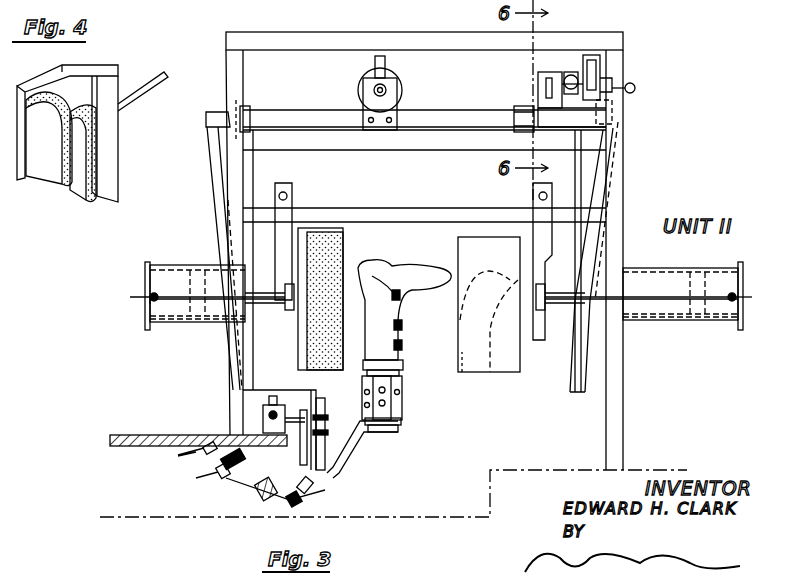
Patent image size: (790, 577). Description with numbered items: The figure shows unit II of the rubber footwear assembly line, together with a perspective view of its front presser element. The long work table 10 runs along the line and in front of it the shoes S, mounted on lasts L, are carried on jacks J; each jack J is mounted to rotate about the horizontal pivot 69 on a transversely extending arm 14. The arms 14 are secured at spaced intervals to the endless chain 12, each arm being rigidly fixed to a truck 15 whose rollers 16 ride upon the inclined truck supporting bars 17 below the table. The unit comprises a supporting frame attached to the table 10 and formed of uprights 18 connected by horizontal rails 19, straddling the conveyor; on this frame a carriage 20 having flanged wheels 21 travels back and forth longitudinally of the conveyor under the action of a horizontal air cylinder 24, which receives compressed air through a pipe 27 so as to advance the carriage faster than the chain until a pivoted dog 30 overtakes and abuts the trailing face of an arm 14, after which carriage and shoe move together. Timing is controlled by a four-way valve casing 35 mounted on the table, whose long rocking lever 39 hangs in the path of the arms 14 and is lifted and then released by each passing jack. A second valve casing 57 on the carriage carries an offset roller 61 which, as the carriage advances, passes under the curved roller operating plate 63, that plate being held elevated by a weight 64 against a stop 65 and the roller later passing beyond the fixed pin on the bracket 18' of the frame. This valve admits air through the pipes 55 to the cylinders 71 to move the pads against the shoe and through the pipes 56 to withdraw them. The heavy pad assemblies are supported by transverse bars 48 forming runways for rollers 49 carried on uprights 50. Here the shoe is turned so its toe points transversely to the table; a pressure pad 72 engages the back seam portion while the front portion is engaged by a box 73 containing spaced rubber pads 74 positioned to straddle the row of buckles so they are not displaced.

In FIG. 3, the table 10 is at (132, 434).
In FIG. 3, the chain 12 is at (281, 497).
In FIG. 3, the transversely extending arm 14 is at (352, 460).
In FIG. 3, the truck 15 is at (238, 484).
In FIG. 3, the rollers 16 is at (198, 481).
In FIG. 3, the truck supporting bars 17 is at (323, 498).
In FIG. 3, the uprights 18 is at (433, 252).
In FIG. 3, the bracket 18' is at (624, 112).
In FIG. 3, the horizontal rails 19 is at (300, 38).
In FIG. 3, the carriage 20 is at (455, 112).
In FIG. 3, the flanged wheels 21 is at (244, 104).
In FIG. 3, the air cylinder 24 is at (358, 92).
In FIG. 3, the pipe 27 is at (385, 60).
In FIG. 3, the dog 30 is at (368, 432).
In FIG. 3, the four-way valve casing 35 is at (262, 418).
In FIG. 3, the rocking lever 39 is at (300, 450).
In FIG. 3, the transverse bars 48 is at (418, 194).
In FIG. 3, the rollers 49 is at (292, 195).
In FIG. 3, the uprights 50 is at (288, 288).
In FIG. 3, the pipes 55 is at (138, 297).
In FIG. 3, the pipes 56 is at (225, 322).
In FIG. 3, the valve casing 57 is at (538, 80).
In FIG. 3, the offset roller 61 is at (610, 62).
In FIG. 3, the roller operating plate 63 is at (590, 54).
In FIG. 3, the weight 64 is at (635, 88).
In FIG. 3, the stop 65 is at (600, 72).
In FIG. 3, the horizontal pivot 69 is at (372, 404).
In FIG. 3, the cylinders 71 is at (182, 325).
In FIG. 3, the pressure pad 72 is at (342, 370).
In FIG. 4, the box 73 is at (110, 78).
In FIG. 3, the box 73 is at (510, 376).
In FIG. 4, the rubber pads 74 is at (66, 190).
In FIG. 3, the rubber pads 74 is at (470, 374).
In FIG. 3, the shoe S is at (400, 318).
In FIG. 3, the last L is at (403, 367).
In FIG. 3, the jack J is at (404, 392).